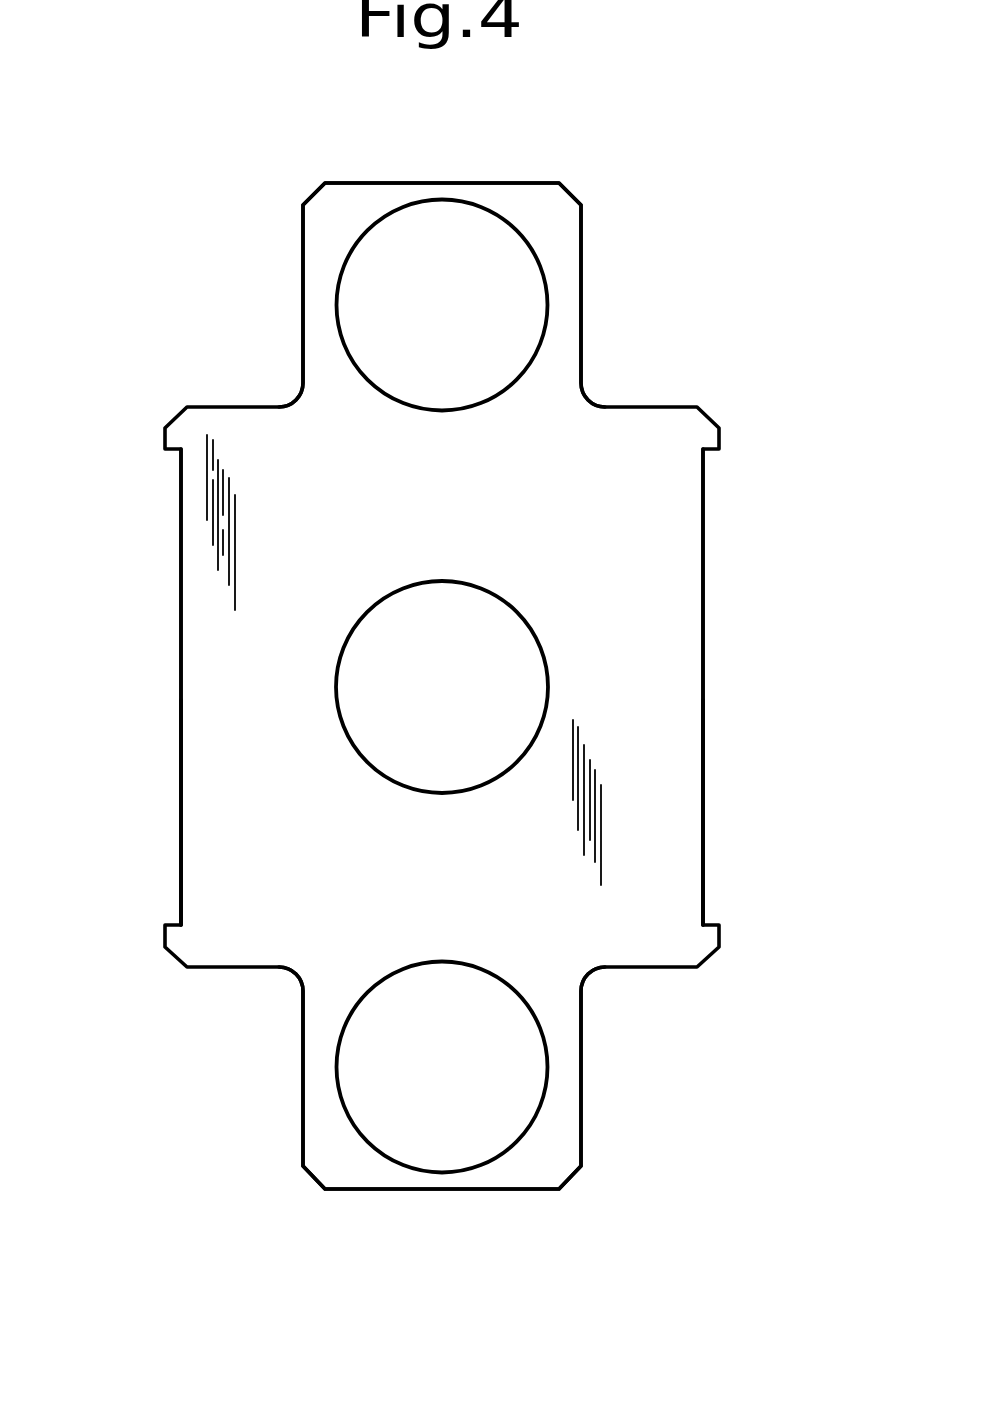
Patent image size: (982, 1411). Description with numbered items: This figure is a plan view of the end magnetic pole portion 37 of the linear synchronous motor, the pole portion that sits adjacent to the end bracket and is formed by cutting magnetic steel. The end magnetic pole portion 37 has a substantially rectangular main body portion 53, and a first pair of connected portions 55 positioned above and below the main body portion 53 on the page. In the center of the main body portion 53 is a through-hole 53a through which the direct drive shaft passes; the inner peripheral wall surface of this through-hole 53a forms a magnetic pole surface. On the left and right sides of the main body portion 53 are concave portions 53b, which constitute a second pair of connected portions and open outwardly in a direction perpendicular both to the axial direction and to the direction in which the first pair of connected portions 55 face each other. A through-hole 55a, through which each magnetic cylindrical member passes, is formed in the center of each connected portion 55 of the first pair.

The end magnetic pole portion 37 is at (279, 353).
The main body portion 53 is at (280, 707).
The through-hole 53a is at (470, 588).
The concave portions 53b is at (180, 828).
The first pair of connected portions 55 is at (320, 265).
The through-hole 55a is at (457, 207).